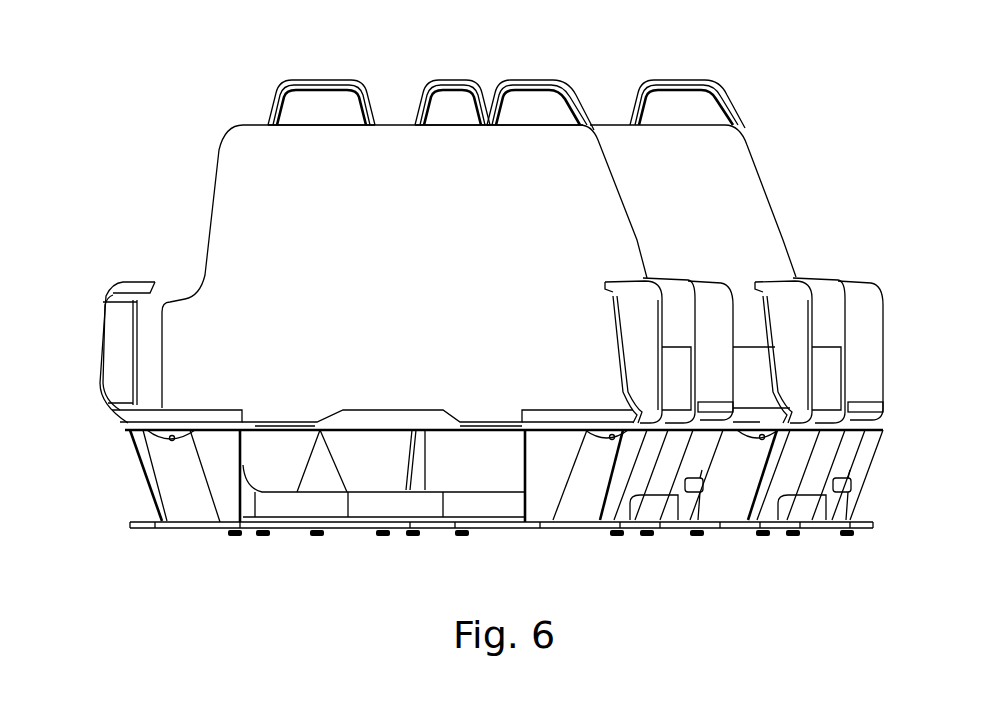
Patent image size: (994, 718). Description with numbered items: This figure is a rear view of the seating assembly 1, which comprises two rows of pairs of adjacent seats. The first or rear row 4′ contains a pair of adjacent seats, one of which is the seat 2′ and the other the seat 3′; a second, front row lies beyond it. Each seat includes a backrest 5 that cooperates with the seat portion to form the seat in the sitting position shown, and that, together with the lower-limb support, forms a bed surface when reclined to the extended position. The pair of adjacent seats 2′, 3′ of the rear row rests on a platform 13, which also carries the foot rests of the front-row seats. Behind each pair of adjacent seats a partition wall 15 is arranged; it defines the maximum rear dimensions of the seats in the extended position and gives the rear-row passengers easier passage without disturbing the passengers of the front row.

The assembly 1 is at (692, 72).
The seat 2′ is at (258, 90).
The seat 3′ is at (586, 94).
The first row 4′ is at (196, 180).
The backrest 5 is at (313, 112).
The platform 13 is at (573, 525).
The partition wall 15 is at (237, 147).